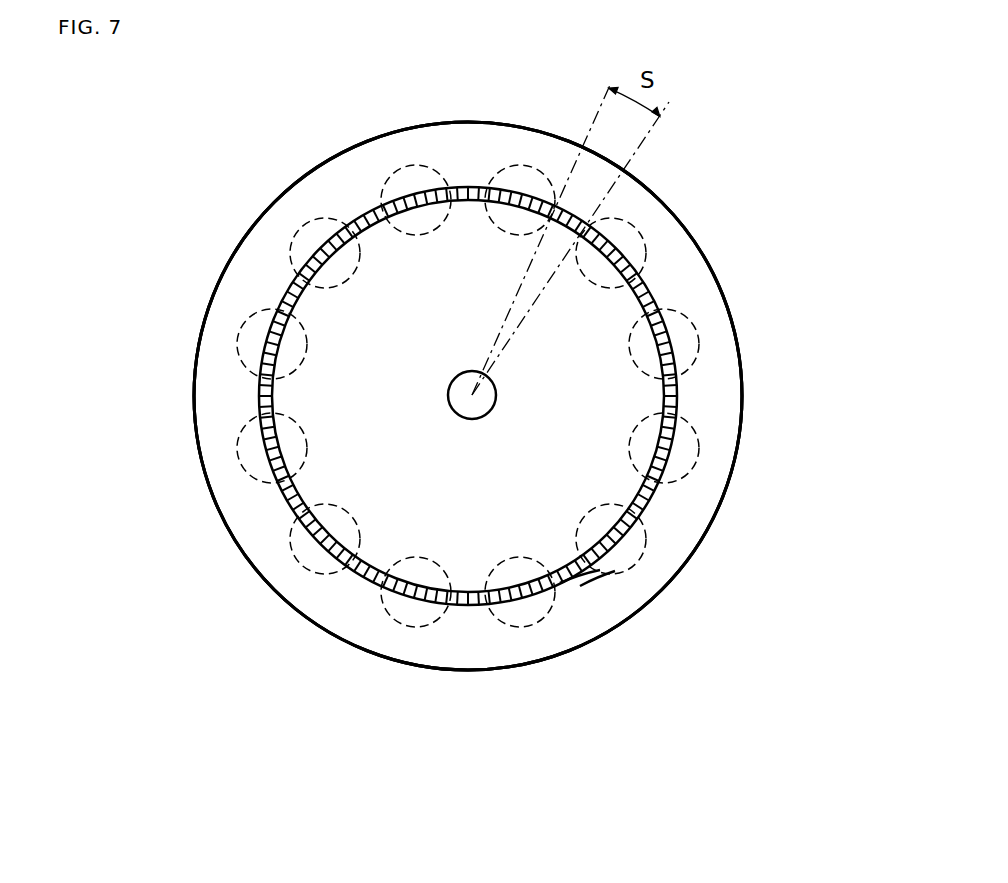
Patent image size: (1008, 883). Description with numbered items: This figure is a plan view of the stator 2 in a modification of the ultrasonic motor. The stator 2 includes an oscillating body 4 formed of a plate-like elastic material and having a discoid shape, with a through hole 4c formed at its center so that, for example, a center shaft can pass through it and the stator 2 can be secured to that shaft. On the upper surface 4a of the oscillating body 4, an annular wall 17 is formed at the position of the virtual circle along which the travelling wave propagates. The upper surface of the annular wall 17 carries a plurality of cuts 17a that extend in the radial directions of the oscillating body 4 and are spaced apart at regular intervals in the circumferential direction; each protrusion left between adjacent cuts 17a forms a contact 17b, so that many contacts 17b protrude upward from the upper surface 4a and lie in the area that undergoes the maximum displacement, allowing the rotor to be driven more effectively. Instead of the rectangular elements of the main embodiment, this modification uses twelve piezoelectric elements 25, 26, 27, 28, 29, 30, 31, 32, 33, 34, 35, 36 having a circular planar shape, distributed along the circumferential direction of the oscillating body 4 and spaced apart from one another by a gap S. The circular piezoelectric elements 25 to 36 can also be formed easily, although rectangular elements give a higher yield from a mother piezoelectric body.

The stator 2 is at (287, 188).
The oscillating body 4 is at (322, 160).
The upper surface 4a is at (243, 268).
The through hole 4c is at (474, 400).
The annular wall 17 is at (648, 509).
The cut 17a is at (580, 575).
The contact 17b is at (590, 575).
The piezoelectric element 25 is at (522, 167).
The piezoelectric element 26 is at (638, 230).
The piezoelectric element 27 is at (693, 333).
The piezoelectric element 28 is at (695, 438).
The piezoelectric element 29 is at (642, 552).
The piezoelectric element 30 is at (545, 623).
The piezoelectric element 31 is at (407, 625).
The piezoelectric element 32 is at (293, 557).
The piezoelectric element 33 is at (243, 468).
The piezoelectric element 34 is at (240, 335).
The piezoelectric element 35 is at (300, 228).
The piezoelectric element 36 is at (408, 167).